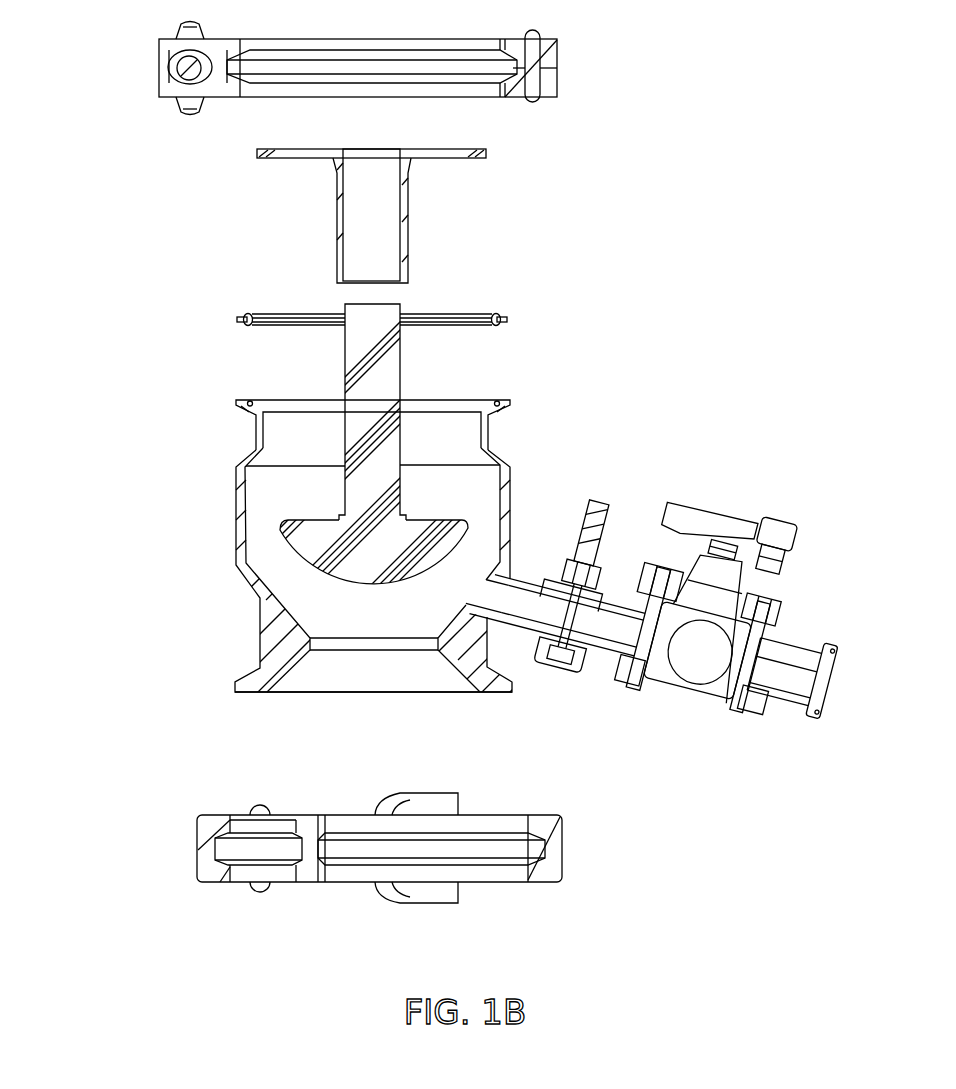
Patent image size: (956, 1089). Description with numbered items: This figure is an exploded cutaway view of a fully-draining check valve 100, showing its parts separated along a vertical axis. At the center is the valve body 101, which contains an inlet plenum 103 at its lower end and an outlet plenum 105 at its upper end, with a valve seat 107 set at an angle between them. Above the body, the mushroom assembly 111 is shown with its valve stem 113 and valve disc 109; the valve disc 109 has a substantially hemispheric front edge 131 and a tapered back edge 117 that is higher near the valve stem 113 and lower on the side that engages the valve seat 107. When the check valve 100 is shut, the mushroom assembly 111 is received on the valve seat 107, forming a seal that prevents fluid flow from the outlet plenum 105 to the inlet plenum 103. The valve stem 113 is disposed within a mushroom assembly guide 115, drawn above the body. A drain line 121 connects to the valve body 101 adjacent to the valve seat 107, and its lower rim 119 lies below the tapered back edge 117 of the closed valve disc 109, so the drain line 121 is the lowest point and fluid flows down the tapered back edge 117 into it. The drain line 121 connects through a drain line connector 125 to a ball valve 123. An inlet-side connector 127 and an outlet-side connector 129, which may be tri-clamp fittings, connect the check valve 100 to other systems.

The fully-draining check valve 100 is at (670, 57).
The valve body 101 is at (236, 487).
The inlet plenum 103 is at (378, 673).
The outlet plenum 105 is at (275, 433).
The valve seat 107 is at (300, 628).
The valve disc 109 is at (447, 543).
The mushroom assembly 111 is at (343, 505).
The valve stem 113 is at (393, 370).
The mushroom assembly guide 115 is at (411, 227).
The tapered back edge 117 is at (402, 518).
The lower rim 119 is at (452, 600).
The drain line 121 is at (524, 632).
The ball valve 123 is at (683, 703).
The drain line connector 125 is at (568, 682).
The inlet-side connector 127 is at (180, 855).
The outlet-side connector 129 is at (161, 70).
The front edge 131 is at (308, 574).